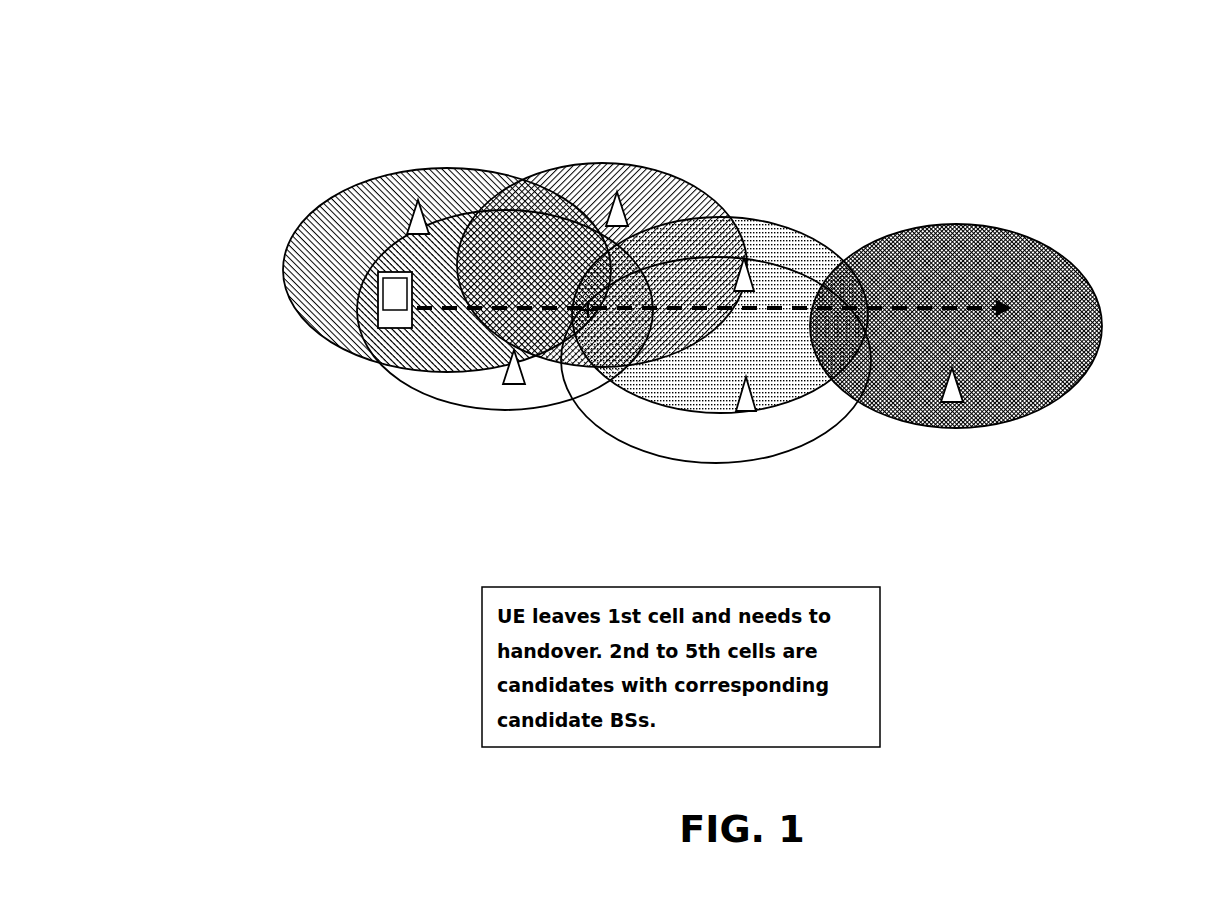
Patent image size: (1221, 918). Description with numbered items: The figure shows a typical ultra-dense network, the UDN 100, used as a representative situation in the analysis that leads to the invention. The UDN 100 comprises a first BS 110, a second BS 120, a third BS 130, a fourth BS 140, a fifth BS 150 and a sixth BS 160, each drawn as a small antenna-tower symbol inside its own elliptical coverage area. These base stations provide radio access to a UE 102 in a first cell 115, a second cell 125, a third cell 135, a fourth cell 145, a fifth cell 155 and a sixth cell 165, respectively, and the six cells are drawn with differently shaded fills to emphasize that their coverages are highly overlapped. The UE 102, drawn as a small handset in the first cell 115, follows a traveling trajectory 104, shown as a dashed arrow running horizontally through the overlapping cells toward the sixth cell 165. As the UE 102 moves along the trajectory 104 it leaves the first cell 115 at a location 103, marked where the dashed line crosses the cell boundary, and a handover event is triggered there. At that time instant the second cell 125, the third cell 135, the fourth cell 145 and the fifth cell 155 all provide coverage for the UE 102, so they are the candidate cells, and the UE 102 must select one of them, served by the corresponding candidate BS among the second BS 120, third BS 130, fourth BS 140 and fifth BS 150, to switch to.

The UDN 100 is at (1122, 136).
The UE 102 is at (385, 322).
The location 103 is at (586, 312).
The traveling trajectory 104 is at (937, 303).
The first BS 110 is at (388, 222).
The first cell 115 is at (332, 303).
The second BS 120 is at (512, 396).
The second cell 125 is at (455, 398).
The third BS 130 is at (650, 206).
The third cell 135 is at (562, 182).
The fourth BS 140 is at (768, 278).
The fourth cell 145 is at (820, 257).
The fifth BS 150 is at (744, 425).
The fifth cell 155 is at (813, 427).
The sixth BS 160 is at (956, 413).
The sixth cell 165 is at (1057, 377).